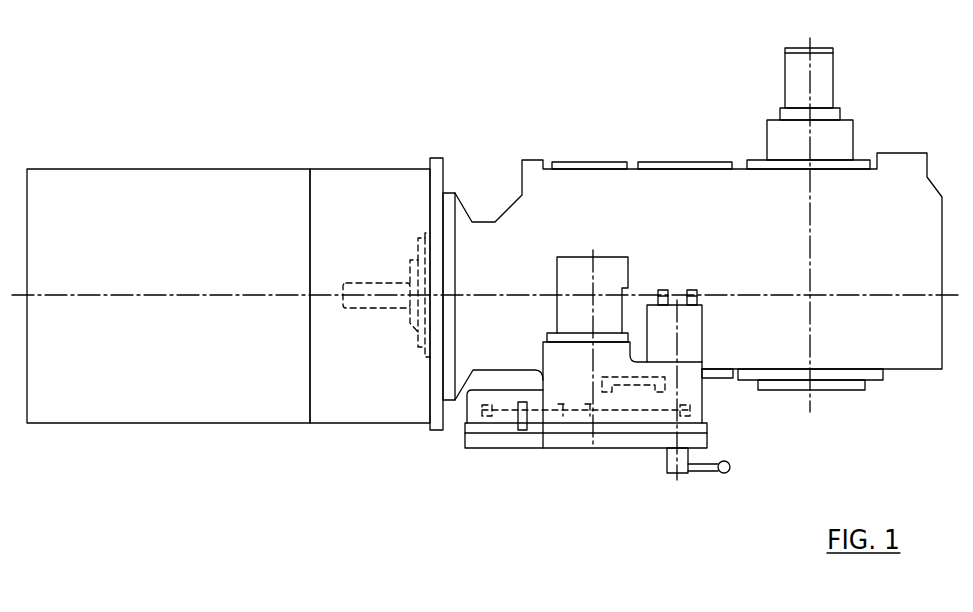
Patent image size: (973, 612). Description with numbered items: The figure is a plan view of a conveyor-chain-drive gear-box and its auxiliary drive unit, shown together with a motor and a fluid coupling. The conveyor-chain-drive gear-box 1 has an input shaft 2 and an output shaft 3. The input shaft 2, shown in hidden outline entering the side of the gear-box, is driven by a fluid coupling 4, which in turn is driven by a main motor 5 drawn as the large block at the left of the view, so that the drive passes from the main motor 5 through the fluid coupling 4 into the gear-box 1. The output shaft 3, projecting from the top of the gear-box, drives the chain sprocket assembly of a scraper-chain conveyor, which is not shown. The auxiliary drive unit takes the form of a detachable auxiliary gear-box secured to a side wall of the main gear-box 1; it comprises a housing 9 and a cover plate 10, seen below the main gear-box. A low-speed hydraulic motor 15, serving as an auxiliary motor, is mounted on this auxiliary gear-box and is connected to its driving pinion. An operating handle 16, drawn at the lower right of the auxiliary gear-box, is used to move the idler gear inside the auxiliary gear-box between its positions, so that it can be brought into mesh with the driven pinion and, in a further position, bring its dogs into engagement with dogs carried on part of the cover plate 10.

The conveyor-chain-drive gear-box 1 is at (521, 152).
The input shaft 2 is at (362, 300).
The output shaft 3 is at (825, 65).
The fluid coupling 4 is at (343, 191).
The main motor 5 is at (117, 191).
The housing 9 is at (495, 413).
The cover plate 10 is at (597, 440).
The low-speed hydraulic motor 15 is at (577, 266).
The operating handle 16 is at (712, 477).